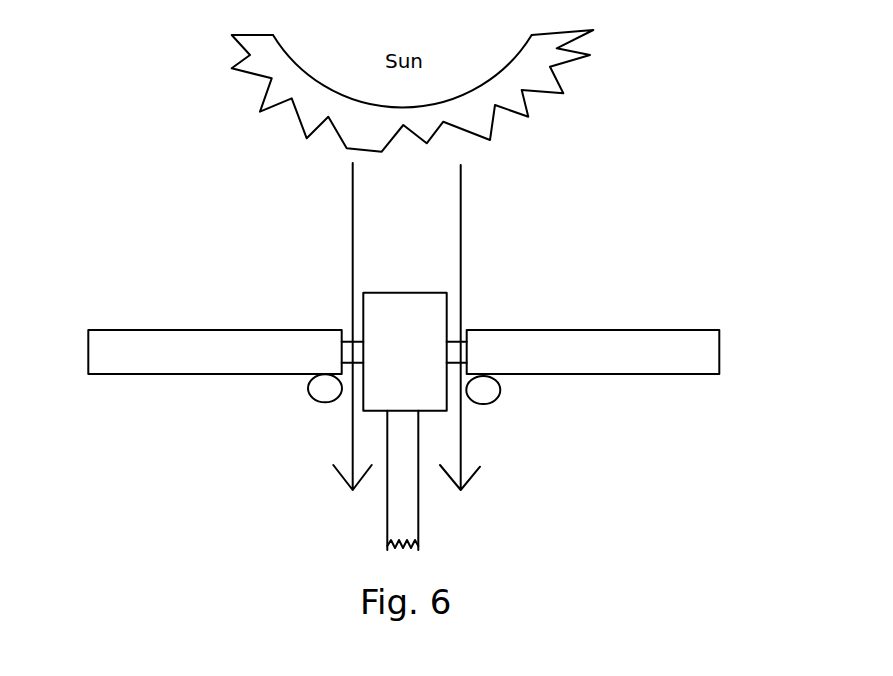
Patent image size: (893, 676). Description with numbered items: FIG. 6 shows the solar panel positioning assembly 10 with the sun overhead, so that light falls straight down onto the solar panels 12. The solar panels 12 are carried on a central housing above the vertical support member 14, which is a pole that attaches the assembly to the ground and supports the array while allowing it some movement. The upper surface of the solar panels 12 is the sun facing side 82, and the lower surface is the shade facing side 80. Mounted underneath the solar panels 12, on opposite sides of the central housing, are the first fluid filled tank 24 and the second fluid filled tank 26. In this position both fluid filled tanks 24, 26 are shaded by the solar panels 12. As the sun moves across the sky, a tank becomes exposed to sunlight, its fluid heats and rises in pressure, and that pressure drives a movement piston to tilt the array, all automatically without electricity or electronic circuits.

The solar panel positioning assembly 10 is at (113, 107).
The solar panel 12 is at (150, 337).
The vertical support member 14 is at (410, 530).
The first fluid filled tank 24 is at (313, 402).
The fluid filled tank 26 is at (485, 390).
The shade facing side 80 is at (667, 403).
The sun facing side 82 is at (668, 297).